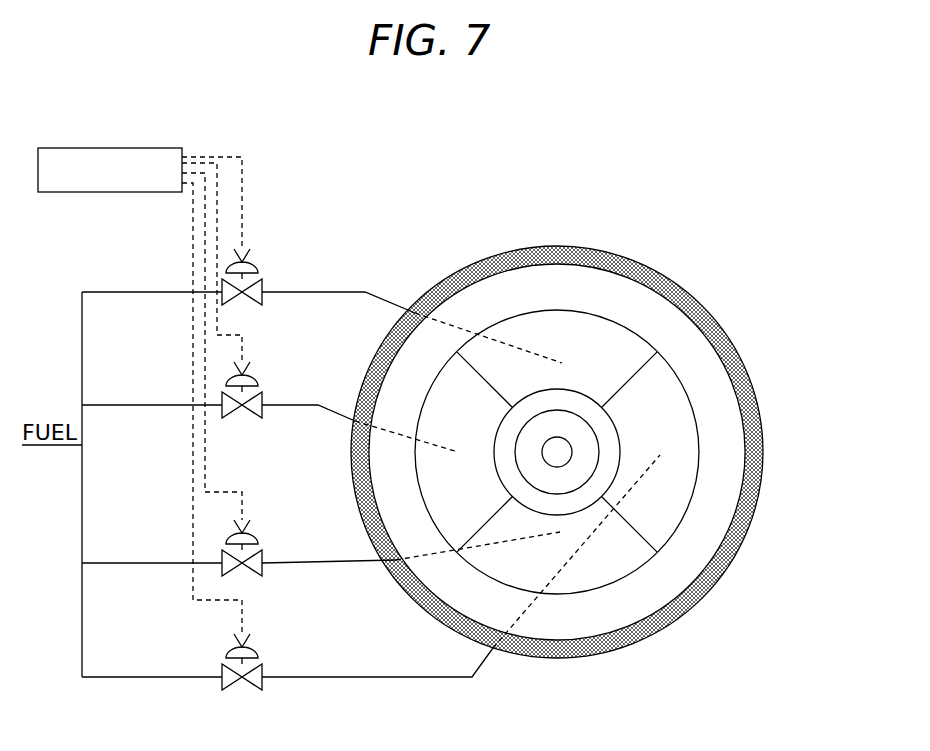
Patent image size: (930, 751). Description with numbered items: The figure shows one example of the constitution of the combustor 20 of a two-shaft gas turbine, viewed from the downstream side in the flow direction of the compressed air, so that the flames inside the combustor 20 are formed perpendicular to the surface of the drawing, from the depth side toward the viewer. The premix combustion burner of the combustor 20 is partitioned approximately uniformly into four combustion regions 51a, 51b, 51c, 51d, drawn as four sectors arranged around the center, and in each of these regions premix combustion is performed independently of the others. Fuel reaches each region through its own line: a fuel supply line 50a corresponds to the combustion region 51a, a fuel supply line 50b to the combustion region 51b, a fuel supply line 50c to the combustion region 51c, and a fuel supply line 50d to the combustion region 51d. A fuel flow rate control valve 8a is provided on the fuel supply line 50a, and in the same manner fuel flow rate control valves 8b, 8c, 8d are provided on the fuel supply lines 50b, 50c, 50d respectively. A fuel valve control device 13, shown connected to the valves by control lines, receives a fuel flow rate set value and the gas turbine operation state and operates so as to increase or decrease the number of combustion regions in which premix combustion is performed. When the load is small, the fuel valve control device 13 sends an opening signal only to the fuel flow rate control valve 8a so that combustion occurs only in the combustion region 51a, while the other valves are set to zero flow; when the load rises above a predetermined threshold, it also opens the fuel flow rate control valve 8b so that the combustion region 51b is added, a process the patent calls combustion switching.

The fuel valve control device 13 is at (110, 178).
The combustor 20 is at (482, 262).
The fuel supply line 50a is at (112, 292).
The fuel supply line 50b is at (112, 405).
The fuel supply line 50c is at (112, 677).
The fuel supply line 50d is at (112, 563).
The fuel flow rate control valve 8a is at (256, 273).
The fuel flow rate control valve 8b is at (256, 386).
The fuel flow rate control valve 8c is at (256, 658).
The fuel flow rate control valve 8d is at (256, 544).
The combustion region 51a is at (562, 333).
The combustion region 51b is at (463, 502).
The combustion region 51c is at (675, 490).
The combustion region 51d is at (600, 558).